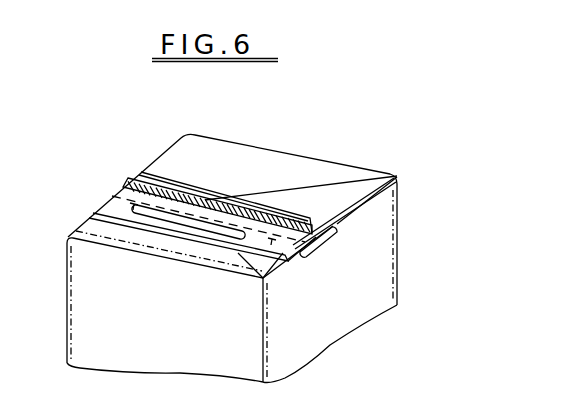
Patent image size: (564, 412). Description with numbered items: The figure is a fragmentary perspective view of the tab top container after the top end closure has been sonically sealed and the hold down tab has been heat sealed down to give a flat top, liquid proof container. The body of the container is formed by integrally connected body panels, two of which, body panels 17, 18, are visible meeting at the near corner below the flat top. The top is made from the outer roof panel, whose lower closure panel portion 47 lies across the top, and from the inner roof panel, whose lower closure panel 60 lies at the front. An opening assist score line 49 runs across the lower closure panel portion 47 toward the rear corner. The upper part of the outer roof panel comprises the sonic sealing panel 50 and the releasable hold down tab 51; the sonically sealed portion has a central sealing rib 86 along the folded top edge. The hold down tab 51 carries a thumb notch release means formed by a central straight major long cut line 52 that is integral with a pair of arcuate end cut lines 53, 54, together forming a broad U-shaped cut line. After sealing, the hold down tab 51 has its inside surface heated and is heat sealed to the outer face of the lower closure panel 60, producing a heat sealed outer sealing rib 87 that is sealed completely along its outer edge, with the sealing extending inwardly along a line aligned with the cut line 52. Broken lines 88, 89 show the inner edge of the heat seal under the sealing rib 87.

The body panel 17 is at (167, 310).
The body panel 18 is at (330, 283).
The lower closure panel portion 47 is at (268, 192).
The opening assist score line 49 is at (335, 183).
The sonic sealing panel 50 is at (129, 180).
The hold down tab 51 is at (124, 190).
The central straight major long cut line 52 is at (183, 214).
The end cut line 53 is at (215, 238).
The end cut line 54 is at (147, 209).
The lower closure panel 60 is at (68, 238).
The central sealing rib 86 is at (127, 184).
The outer sealing rib 87 is at (110, 207).
The broken line 88 is at (120, 229).
The broken line 89 is at (234, 283).